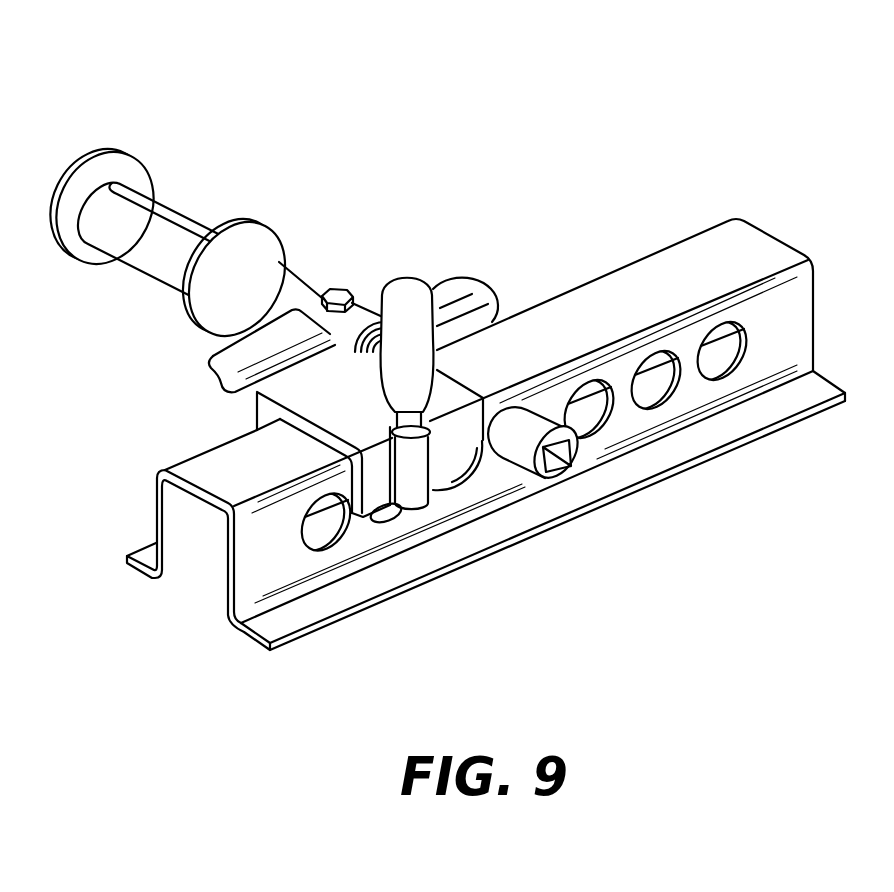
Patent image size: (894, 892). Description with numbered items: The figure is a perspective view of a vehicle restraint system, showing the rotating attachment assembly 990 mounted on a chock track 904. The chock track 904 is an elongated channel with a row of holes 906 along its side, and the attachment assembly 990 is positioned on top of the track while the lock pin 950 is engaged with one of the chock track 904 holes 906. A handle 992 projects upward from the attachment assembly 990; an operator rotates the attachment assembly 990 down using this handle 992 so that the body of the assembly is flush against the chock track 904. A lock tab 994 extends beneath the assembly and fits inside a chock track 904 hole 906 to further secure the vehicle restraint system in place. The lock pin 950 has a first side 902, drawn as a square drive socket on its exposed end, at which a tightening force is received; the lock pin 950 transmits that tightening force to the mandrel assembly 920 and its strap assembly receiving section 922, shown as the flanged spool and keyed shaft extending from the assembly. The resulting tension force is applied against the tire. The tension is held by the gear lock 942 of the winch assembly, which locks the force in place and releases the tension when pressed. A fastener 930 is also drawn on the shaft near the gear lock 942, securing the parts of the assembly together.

The chock track 904 is at (797, 355).
The hole 906 is at (717, 370).
The first side 902 is at (563, 458).
The lock pin 950 is at (521, 466).
The attachment assembly 990 is at (300, 394).
The handle 992 is at (399, 311).
The lock tab 994 is at (403, 505).
The mandrel assembly 920 is at (208, 211).
The strap assembly receiving section 922 is at (160, 210).
The bolt 930 is at (334, 288).
The gear lock 942 is at (239, 339).